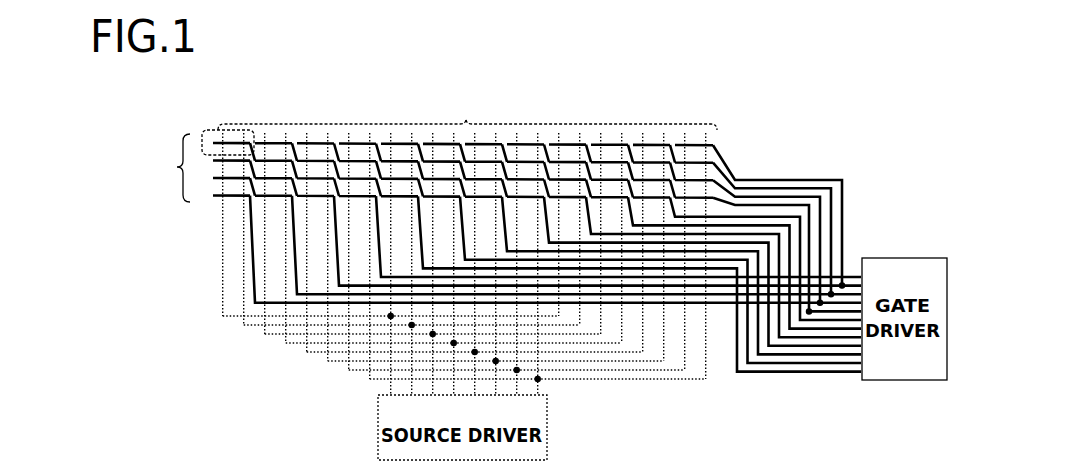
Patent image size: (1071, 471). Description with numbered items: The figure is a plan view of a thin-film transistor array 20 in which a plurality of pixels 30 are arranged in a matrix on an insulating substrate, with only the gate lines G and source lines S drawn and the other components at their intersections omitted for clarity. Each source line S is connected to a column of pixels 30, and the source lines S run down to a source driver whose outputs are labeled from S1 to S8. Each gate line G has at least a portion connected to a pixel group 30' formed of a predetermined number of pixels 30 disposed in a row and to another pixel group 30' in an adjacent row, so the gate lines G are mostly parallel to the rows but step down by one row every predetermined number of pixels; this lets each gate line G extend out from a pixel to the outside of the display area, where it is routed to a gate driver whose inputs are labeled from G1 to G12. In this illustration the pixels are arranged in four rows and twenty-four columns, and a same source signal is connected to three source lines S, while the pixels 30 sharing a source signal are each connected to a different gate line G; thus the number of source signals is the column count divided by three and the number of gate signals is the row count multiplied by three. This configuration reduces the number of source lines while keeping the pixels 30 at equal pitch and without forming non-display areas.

The thin-film transistor array 20 is at (152, 132).
The pixel 30 is at (221, 124).
The pixel group 30' is at (467, 112).
The source line S is at (214, 282).
The gate line G is at (737, 161).
The gate driver output 1 G1 is at (876, 279).
The gate driver output 12 G12 is at (880, 373).
The source driver output 1 S1 is at (392, 409).
The source driver output 8 S8 is at (531, 409).